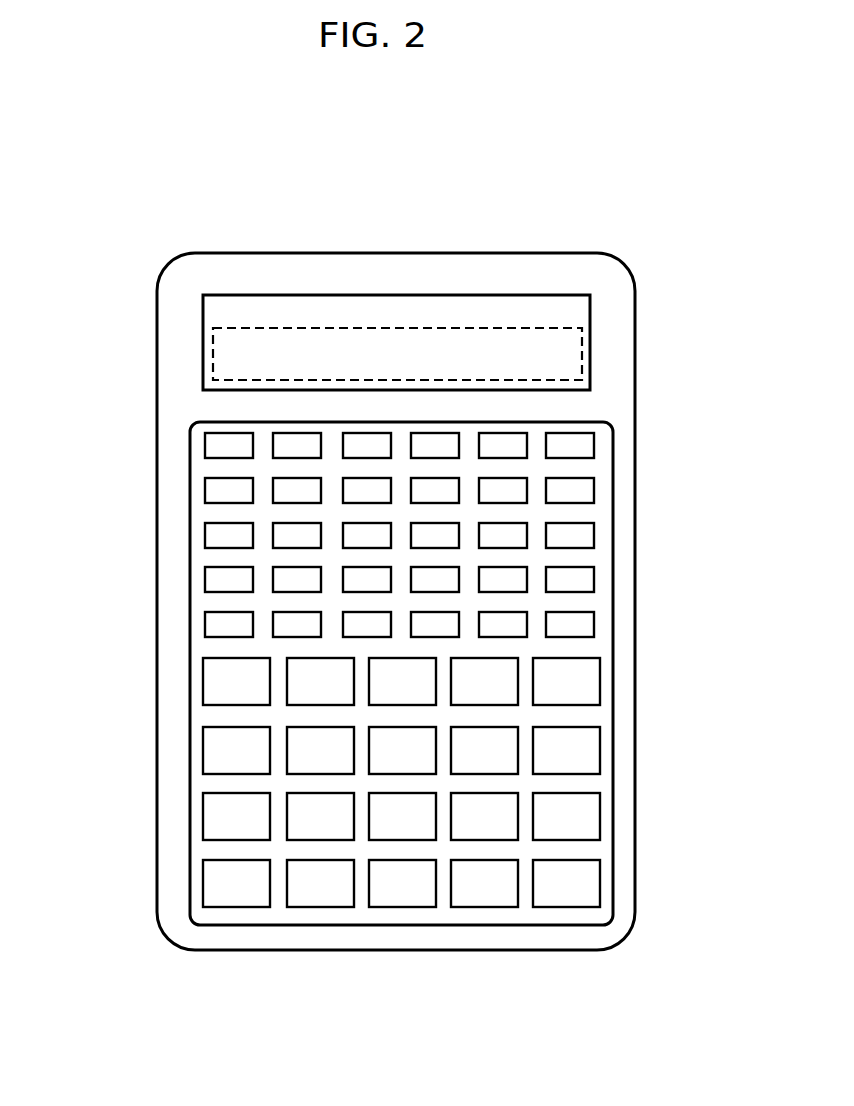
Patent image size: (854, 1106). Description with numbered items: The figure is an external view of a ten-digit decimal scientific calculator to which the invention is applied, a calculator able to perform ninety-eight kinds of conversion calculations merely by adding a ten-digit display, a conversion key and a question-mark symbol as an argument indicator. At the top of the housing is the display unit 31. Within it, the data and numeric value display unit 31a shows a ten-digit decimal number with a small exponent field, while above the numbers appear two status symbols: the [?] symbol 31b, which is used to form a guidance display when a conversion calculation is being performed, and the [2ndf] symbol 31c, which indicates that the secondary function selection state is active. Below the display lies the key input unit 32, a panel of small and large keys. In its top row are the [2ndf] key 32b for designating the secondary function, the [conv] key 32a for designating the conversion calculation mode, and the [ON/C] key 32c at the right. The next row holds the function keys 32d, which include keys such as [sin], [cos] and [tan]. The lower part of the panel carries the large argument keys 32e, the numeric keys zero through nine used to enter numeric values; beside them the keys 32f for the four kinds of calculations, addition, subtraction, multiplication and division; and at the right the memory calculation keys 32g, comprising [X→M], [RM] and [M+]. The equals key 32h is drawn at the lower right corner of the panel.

The display unit 31 is at (590, 333).
The data and numeric value display unit 31a is at (450, 323).
The [?] symbol 31b is at (240, 307).
The [2ndf] symbol 31c is at (330, 303).
The key input unit 32 is at (192, 577).
The [conv] key 32a is at (292, 438).
The [2ndf] key 32b is at (222, 435).
The [ON/C] key 32c is at (593, 440).
The function keys 32d is at (355, 485).
The argument keys 32e is at (203, 880).
The four-arithmetic-operation keys 32f is at (520, 795).
The memory calculation keys 32g is at (600, 825).
The equals key 32h is at (600, 905).